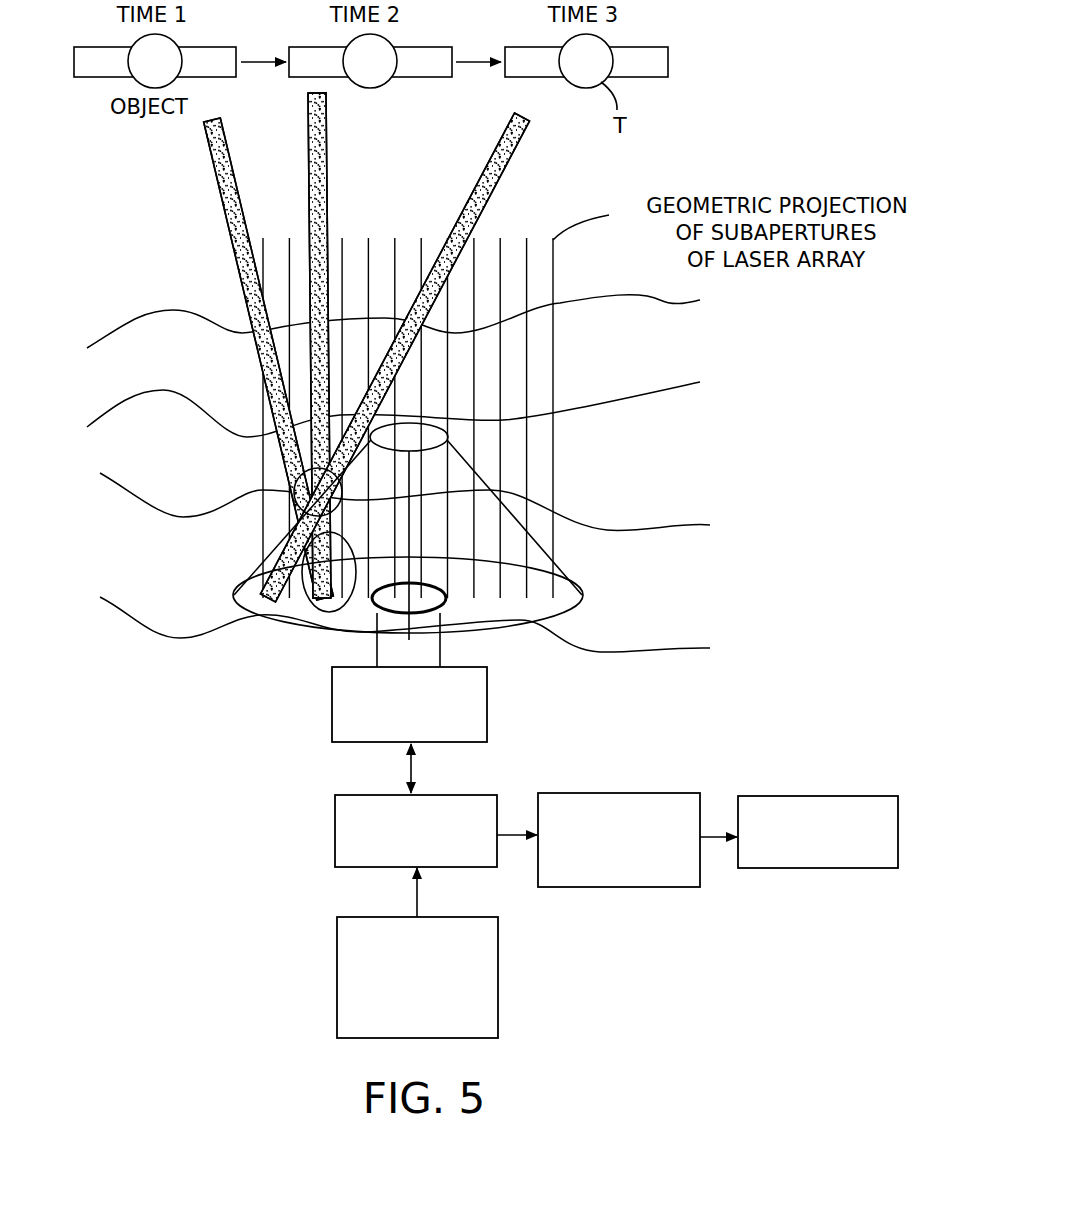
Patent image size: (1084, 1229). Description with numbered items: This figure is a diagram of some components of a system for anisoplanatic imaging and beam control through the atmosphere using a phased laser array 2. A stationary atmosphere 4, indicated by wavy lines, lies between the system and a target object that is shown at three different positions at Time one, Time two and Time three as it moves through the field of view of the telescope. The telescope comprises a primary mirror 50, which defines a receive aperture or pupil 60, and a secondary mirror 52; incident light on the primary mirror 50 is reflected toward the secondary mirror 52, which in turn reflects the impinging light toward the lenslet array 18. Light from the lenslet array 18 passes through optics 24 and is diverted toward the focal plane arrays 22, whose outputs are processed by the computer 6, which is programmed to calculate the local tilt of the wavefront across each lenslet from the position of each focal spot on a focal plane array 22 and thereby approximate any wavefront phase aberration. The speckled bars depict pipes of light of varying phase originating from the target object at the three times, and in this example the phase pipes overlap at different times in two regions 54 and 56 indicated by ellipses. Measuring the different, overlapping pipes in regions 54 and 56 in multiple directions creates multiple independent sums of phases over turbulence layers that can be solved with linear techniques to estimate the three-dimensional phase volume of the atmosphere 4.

The phased laser array 2 is at (498, 947).
The atmosphere 4 is at (762, 356).
The computer 6 is at (847, 796).
The lenslet array 18 is at (487, 713).
The focal plane arrays 22 is at (650, 793).
The optics 24 is at (455, 795).
The primary mirror 50 is at (583, 612).
The secondary mirror 52 is at (450, 430).
The overlap region 54 is at (296, 480).
The overlap region 56 is at (329, 612).
The receive aperture 60 is at (487, 600).